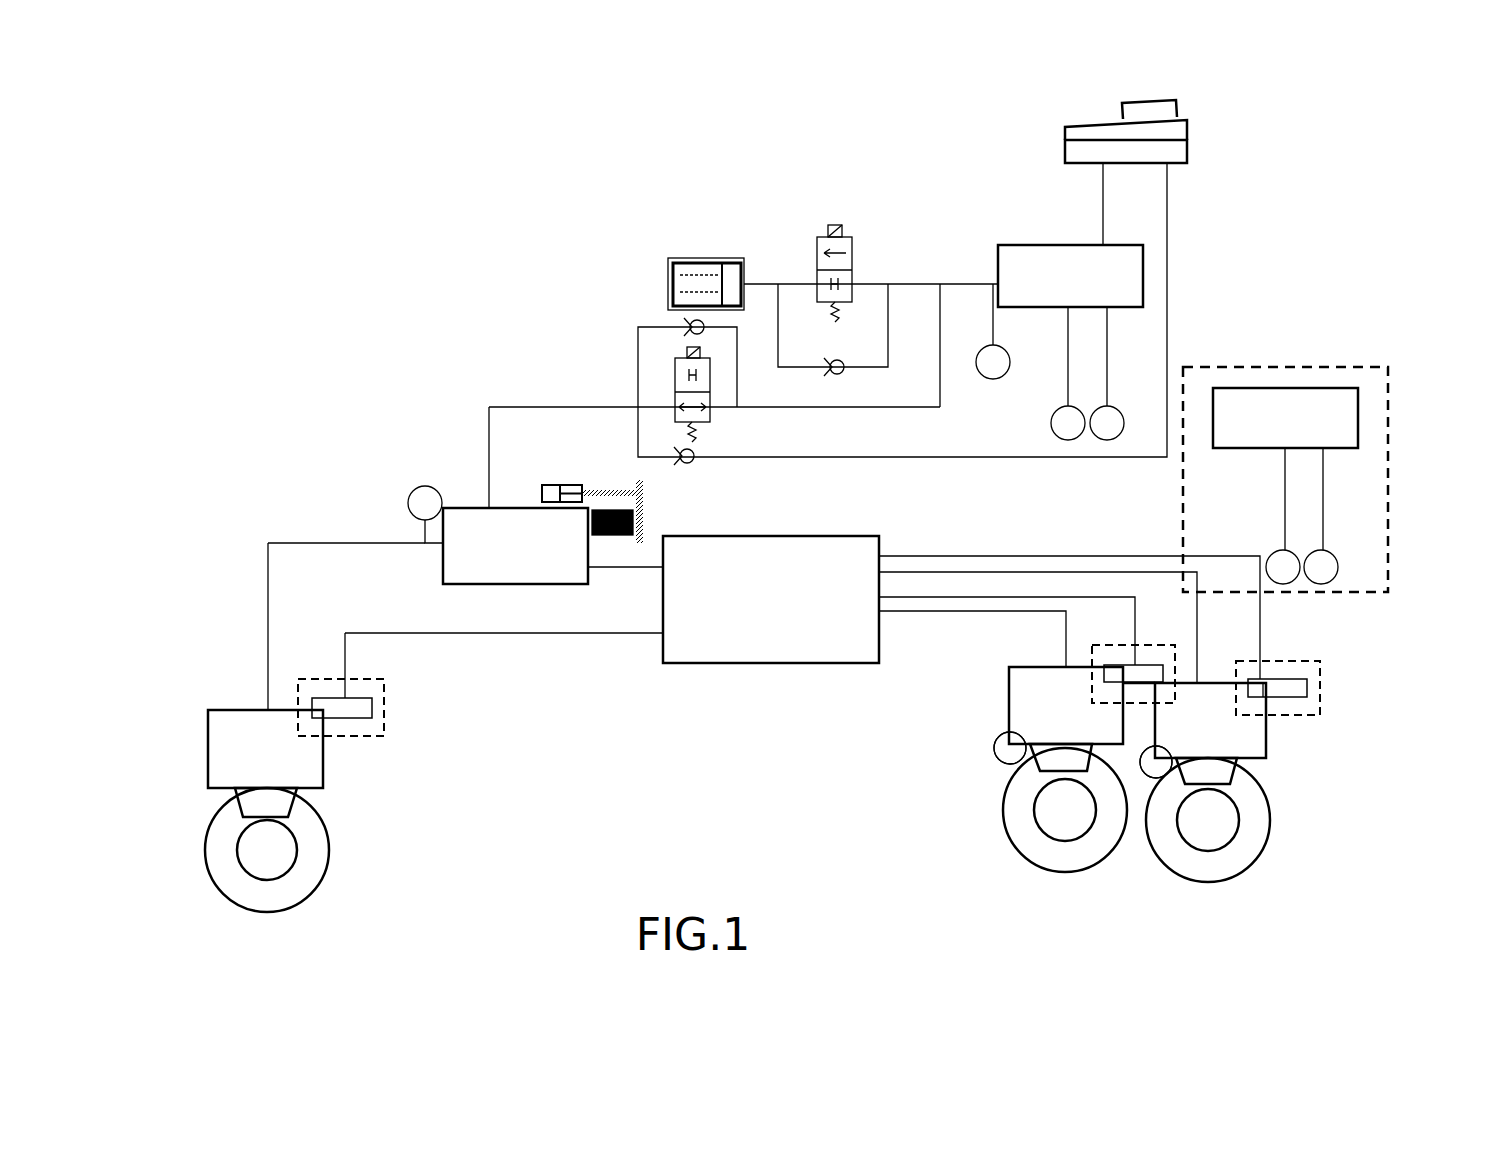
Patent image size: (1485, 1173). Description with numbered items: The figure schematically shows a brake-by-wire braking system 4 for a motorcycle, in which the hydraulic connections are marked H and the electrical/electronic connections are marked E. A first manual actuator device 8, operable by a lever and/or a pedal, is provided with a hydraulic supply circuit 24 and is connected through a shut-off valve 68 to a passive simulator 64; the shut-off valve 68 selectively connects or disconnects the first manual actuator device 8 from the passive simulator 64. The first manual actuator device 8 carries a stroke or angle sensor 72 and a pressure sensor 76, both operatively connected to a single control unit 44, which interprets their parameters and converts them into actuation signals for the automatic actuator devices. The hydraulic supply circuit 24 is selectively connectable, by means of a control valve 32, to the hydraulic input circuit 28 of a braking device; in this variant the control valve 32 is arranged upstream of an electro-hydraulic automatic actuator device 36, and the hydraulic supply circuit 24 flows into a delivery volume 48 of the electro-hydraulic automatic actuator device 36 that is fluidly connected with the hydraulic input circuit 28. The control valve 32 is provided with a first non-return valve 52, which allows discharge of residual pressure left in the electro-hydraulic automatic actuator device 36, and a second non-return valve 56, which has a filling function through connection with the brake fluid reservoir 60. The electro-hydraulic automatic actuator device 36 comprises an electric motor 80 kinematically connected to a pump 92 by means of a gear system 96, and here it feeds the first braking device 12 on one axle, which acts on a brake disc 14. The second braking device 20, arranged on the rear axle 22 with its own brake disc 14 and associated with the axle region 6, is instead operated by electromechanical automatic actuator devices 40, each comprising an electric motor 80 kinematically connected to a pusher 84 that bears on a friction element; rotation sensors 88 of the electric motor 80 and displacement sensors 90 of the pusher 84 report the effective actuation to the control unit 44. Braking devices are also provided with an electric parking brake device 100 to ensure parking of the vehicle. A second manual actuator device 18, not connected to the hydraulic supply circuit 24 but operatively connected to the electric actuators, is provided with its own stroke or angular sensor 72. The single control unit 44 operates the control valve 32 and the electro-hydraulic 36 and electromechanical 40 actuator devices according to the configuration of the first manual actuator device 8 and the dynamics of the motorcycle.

The brake-by-wire braking system 4 is at (306, 168).
The rear axle 6 is at (1271, 869).
The first manual actuator device 8 is at (1035, 245).
The first braking device 12 is at (190, 812).
The brake disc 14 is at (318, 857).
The second manual actuator device 18 is at (1330, 367).
The second braking device 20 is at (1136, 846).
The rear axle 22 is at (281, 913).
The hydraulic supply circuit 24 is at (918, 402).
The hydraulic input circuit 28 is at (265, 625).
The control valve 32 is at (675, 378).
The electro-hydraulic automatic actuator device 36 is at (517, 585).
The electromechanical automatic actuator device 40 is at (1010, 700).
The single control unit 44 is at (752, 640).
The delivery volume 48 is at (468, 585).
The first non-return valve 52 is at (692, 322).
The second non-return valve 56 is at (692, 461).
The brake fluid reservoir 60 is at (1190, 132).
The passive simulator 64 is at (695, 258).
The shut-off valve 68 is at (820, 237).
The stroke or angle sensor 72 is at (1068, 430).
The pressure sensor 76 is at (993, 366).
The electric motor 80 is at (598, 536).
The pusher 84 is at (1010, 748).
The rotation sensors 88 is at (1010, 750).
The displacement sensors 90 is at (1083, 755).
The pump 92 is at (545, 485).
The gear system 96 is at (605, 490).
The electric parking brake device 100 is at (362, 736).
The hydraulic connection H is at (968, 284).
The electrical/electronic connection E is at (550, 633).